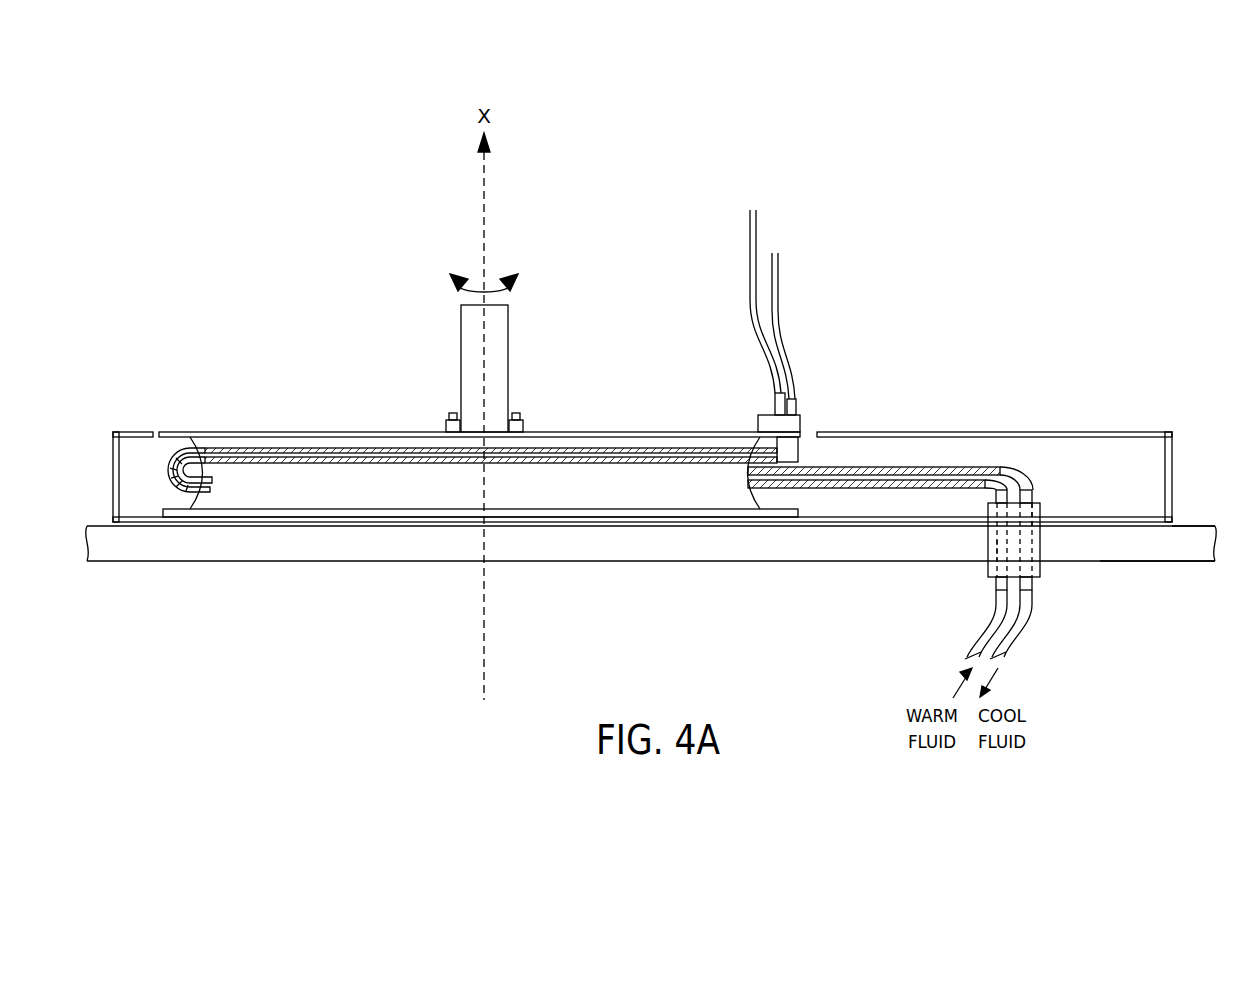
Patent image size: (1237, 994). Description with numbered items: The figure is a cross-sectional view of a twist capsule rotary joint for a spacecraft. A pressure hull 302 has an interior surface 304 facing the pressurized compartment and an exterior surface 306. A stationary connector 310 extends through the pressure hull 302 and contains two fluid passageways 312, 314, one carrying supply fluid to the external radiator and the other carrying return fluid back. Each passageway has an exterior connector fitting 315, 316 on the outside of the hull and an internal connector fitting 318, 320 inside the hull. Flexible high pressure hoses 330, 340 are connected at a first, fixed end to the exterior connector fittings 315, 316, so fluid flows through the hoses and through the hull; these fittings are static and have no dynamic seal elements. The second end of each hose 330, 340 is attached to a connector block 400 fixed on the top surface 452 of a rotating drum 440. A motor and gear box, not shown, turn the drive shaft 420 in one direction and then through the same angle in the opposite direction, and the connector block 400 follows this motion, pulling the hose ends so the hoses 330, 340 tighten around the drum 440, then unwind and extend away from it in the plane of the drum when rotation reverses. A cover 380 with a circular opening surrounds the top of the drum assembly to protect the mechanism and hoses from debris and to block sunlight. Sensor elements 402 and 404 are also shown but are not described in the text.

The pressure hull 302 is at (1167, 553).
The interior surface 304 is at (692, 562).
The exterior surface 306 is at (1197, 526).
The connector 310 is at (1042, 567).
The fluid passageway 312 is at (1000, 567).
The fluid passageway 314 is at (1045, 510).
The exterior connector fitting 315 is at (993, 496).
The exterior connector fitting 316 is at (1036, 492).
The internal connector fitting 318 is at (990, 588).
The internal connector fitting 320 is at (1034, 584).
The flexible high pressure hose 330 is at (320, 448).
The flexible high pressure hose 340 is at (330, 463).
The cover 380 is at (134, 432).
The connector block 400 is at (801, 423).
The sensor probe 402 is at (797, 403).
The sensor probe 404 is at (775, 405).
The drive shaft 420 is at (503, 368).
The rotating drum 440 is at (230, 442).
The top surface 452 is at (264, 432).